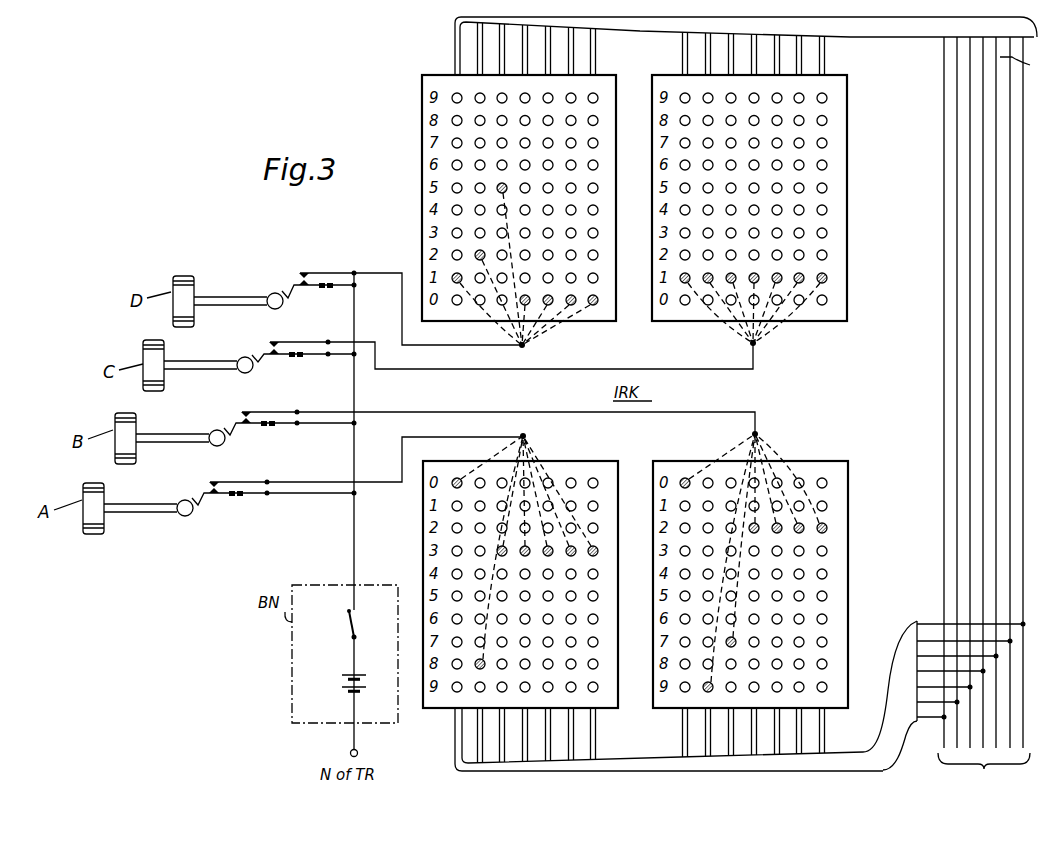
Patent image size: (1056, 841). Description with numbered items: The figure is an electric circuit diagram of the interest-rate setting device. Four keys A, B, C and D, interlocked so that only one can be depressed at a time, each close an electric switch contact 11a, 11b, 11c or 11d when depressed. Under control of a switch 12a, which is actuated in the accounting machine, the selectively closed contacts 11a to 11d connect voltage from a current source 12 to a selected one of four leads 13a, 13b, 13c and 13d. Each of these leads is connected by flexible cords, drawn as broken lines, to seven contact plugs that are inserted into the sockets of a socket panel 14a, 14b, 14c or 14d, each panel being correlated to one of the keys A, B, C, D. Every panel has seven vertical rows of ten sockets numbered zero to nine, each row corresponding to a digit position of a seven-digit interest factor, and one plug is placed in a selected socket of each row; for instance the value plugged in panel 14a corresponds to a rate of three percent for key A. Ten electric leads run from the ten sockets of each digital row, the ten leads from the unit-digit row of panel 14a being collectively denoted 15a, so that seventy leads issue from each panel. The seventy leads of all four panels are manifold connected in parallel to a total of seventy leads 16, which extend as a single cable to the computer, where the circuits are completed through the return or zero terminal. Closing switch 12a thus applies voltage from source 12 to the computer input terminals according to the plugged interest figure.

The electric switch contact 11a is at (232, 480).
The electric switch contact 11b is at (260, 411).
The electric switch contact 11c is at (292, 341).
The electric switch contact 11d is at (317, 271).
The current source 12 is at (342, 684).
The switch 12a is at (345, 630).
The lead 13a is at (414, 437).
The lead 13b is at (504, 411).
The lead 13c is at (580, 369).
The lead 13d is at (363, 272).
The socket panel 14a is at (422, 533).
The socket panel 14b is at (849, 528).
The socket panel 14c is at (849, 145).
The socket panel 14d is at (421, 143).
The leads 15a is at (669, 739).
The leads 16 is at (954, 416).